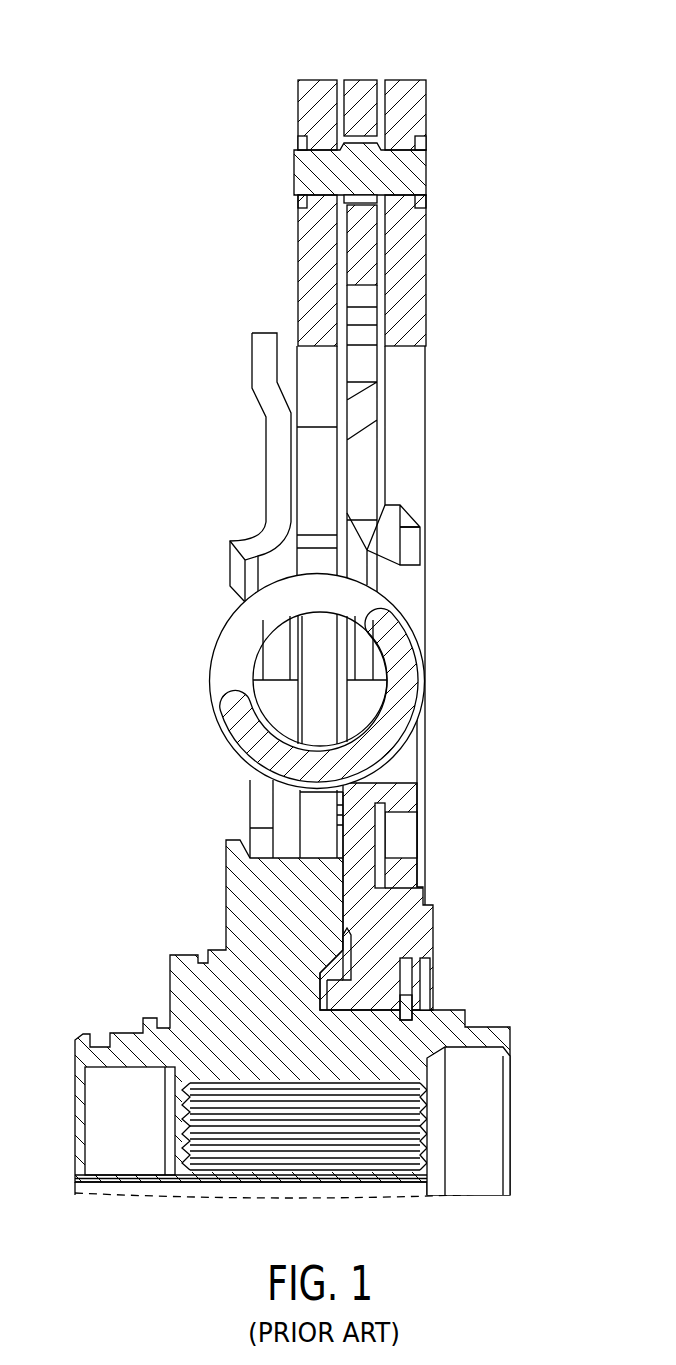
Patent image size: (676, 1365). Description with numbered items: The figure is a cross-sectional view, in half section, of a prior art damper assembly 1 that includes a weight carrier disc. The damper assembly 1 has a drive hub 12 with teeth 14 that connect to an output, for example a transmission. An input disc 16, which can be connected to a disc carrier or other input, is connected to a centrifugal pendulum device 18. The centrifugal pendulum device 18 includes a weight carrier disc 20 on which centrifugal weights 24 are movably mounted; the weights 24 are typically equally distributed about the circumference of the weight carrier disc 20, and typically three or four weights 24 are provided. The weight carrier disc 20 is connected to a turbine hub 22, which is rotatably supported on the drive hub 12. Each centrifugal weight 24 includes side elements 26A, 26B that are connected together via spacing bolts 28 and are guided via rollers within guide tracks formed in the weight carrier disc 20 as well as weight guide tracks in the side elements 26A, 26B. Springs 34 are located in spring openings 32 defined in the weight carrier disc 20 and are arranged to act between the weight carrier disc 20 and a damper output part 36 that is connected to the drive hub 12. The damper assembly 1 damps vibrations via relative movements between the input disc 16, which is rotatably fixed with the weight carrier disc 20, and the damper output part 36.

The damper assembly 1 is at (445, 97).
The drive hub 12 is at (318, 905).
The teeth 14 is at (410, 1122).
The input disc 16 is at (282, 412).
The centrifugal pendulum device 18 is at (385, 490).
The weight carrier disc 20 is at (383, 524).
The turbine hub 22 is at (375, 968).
The centrifugal weights 24 is at (313, 70).
The side element 26A is at (415, 263).
The side element 26B is at (313, 328).
The spacing bolts 28 is at (412, 172).
The spring openings 32 is at (410, 608).
The springs 34 is at (400, 670).
The damper output part 36 is at (316, 852).